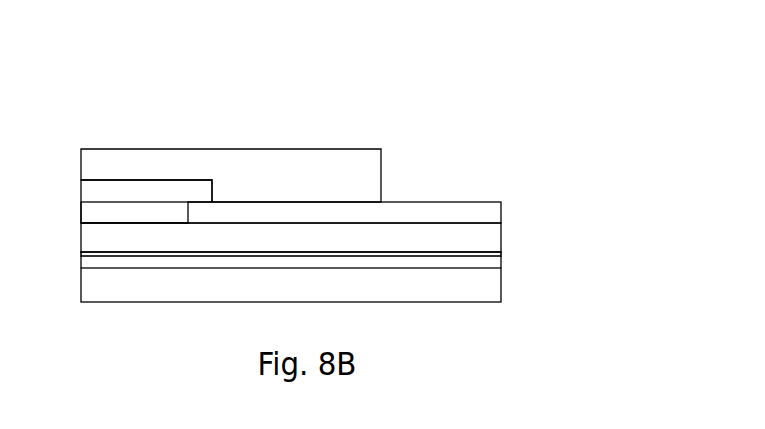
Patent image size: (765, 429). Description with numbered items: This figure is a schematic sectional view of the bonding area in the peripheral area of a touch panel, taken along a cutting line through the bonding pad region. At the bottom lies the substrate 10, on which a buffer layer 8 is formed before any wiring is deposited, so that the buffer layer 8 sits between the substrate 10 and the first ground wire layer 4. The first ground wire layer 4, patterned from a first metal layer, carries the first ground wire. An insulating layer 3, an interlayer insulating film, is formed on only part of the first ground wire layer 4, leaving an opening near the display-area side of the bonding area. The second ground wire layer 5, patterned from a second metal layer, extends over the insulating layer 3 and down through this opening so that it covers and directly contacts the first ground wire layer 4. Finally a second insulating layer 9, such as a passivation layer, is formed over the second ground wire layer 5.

The insulating layer 3 is at (81, 209).
The first ground wire layer 4 is at (385, 238).
The second ground wire layer 5 is at (482, 210).
The buffer layer 8 is at (502, 253).
The second insulating layer 9 is at (312, 163).
The substrate 10 is at (502, 290).